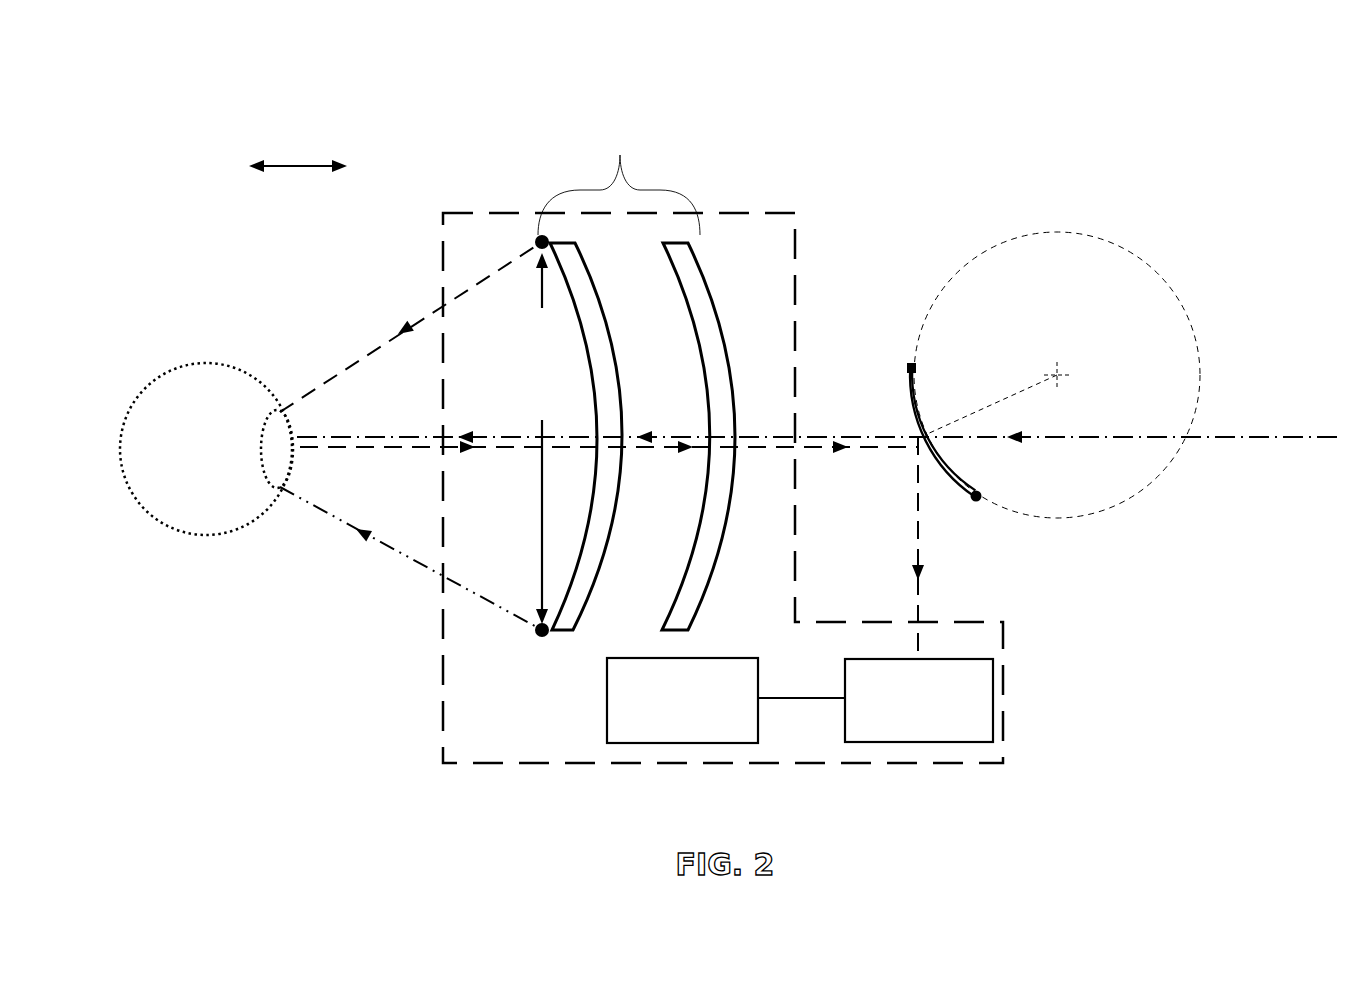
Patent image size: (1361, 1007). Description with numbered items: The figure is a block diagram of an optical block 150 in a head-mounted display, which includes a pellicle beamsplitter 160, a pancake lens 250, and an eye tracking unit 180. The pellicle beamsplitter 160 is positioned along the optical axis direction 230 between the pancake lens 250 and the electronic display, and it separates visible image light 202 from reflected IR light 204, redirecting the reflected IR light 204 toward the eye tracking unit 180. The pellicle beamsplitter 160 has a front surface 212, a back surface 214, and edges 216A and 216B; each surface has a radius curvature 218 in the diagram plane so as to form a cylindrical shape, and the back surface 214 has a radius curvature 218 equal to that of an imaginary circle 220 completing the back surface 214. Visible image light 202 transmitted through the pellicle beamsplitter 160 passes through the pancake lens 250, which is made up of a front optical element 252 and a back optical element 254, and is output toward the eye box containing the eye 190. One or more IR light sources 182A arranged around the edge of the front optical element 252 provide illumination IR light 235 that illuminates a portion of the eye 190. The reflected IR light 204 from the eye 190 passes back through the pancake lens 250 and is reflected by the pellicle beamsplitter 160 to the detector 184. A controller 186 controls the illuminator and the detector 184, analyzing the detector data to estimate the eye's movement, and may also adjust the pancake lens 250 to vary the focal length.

The optical block 150 is at (210, 62).
The optical axis direction 230 is at (293, 126).
The eye tracking unit 180 is at (861, 775).
The controller 186 is at (665, 725).
The detector 184 is at (902, 724).
The eye 190 is at (189, 474).
The visible image light 202 is at (1275, 435).
The reflected IR light 204 is at (347, 473).
The illumination IR light 235 is at (430, 570).
The IR light sources 182A is at (519, 436).
The pancake lens 250 is at (567, 367).
The front optical element 252 is at (565, 269).
The back optical element 254 is at (700, 274).
The imaginary circle 220 is at (1092, 232).
The radius curvature 218 is at (959, 418).
The pellicle beamsplitter 160 is at (967, 397).
The front surface 212 is at (908, 418).
The back surface 214 is at (940, 456).
The edge 216A is at (905, 373).
The edge 216B is at (977, 497).